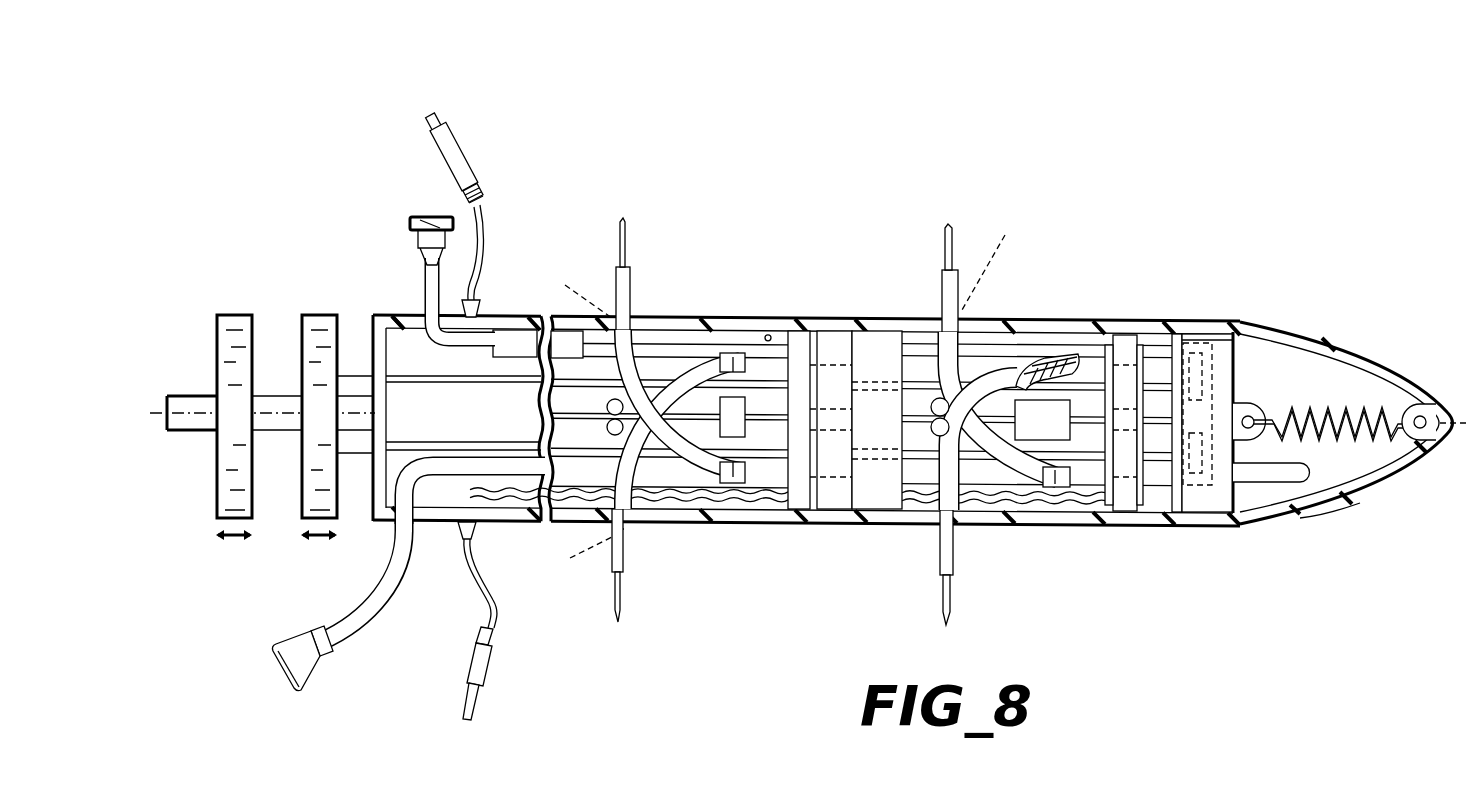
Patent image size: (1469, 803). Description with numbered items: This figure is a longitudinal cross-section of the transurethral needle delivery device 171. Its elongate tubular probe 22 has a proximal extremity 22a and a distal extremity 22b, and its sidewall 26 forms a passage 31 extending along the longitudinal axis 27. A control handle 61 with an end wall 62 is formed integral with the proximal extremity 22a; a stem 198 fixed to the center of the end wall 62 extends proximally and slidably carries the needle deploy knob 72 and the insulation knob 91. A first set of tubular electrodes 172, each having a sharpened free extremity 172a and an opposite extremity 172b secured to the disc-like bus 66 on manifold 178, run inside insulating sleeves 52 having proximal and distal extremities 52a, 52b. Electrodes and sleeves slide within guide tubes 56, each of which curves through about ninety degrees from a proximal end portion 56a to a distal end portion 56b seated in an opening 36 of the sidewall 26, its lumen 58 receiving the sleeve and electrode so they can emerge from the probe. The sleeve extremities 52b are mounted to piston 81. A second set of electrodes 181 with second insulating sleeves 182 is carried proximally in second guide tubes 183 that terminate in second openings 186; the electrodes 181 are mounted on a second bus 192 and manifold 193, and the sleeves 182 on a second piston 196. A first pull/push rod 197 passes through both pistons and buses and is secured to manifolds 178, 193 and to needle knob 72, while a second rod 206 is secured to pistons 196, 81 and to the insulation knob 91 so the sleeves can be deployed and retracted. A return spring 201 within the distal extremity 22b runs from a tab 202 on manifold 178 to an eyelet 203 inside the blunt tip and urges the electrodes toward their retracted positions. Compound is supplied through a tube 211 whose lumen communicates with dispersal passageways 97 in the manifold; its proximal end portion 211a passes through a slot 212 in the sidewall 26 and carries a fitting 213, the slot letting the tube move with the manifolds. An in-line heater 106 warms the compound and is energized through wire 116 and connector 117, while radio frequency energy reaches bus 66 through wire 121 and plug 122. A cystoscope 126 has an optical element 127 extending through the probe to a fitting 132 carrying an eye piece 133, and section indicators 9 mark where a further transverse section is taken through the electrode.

The section line 9- 9 is at (958, 533).
The probe 22 is at (782, 346).
The proximal extremity of probe 22a is at (393, 524).
The distal extremity of probe 22b is at (1372, 487).
The sidewall 26 is at (1188, 330).
The longitudinal axis 27 is at (182, 410).
The passage 31 is at (782, 320).
The openings 36 is at (997, 263).
The insulating sleeve 52 is at (950, 373).
The proximal extremity of insulating sleeve 52a is at (958, 276).
The distal extremity of insulating sleeve 52b is at (1065, 330).
The guide tubes 56 is at (932, 398).
The proximal end portion of guide tube 56a is at (988, 325).
The distal end portion of guide tube 56b is at (1052, 500).
The lumen 58 is at (1040, 325).
The control handle 61 is at (443, 524).
The end wall 62 is at (368, 330).
The bus 66 is at (1183, 522).
The needle deploy knob 72 is at (312, 320).
The piston 81 is at (1120, 522).
The insulation knob 91 is at (237, 318).
The dispersal passageways 97 is at (1222, 400).
The in-line heater 106 is at (515, 330).
The wire 116 is at (482, 240).
The connector 117 is at (467, 155).
The wire 121 is at (492, 585).
The plug 122 is at (492, 660).
The cystoscope 126 is at (385, 596).
The optical element 127 is at (1330, 518).
The fitting 132 is at (316, 664).
The eye piece 133 is at (280, 680).
The transurethral needle delivery device 171 is at (1228, 208).
The first electrodes 172 is at (954, 398).
The free extremity of first electrode 172a is at (945, 245).
The opposite extremity of first electrode 172b is at (1115, 333).
The manifold 178 is at (1242, 390).
The second electrodes 181 is at (626, 240).
The second insulating sleeve 182 is at (632, 290).
The second guide tubes 183 is at (585, 398).
The second openings 186 is at (576, 419).
The second bus 192 is at (835, 511).
The second manifold 193 is at (870, 523).
The second piston 196 is at (800, 522).
The first pull/push rod 197 is at (450, 385).
The stem 198 is at (192, 436).
The return spring 201 is at (1322, 408).
The tab 202 is at (1262, 484).
The eyelet 203 is at (1410, 413).
The lower shaft channel 206 is at (488, 453).
The tube 211 is at (712, 345).
The proximal end portion of tube 211a is at (426, 280).
The slot 212 is at (405, 315).
The fitting 213 is at (424, 216).